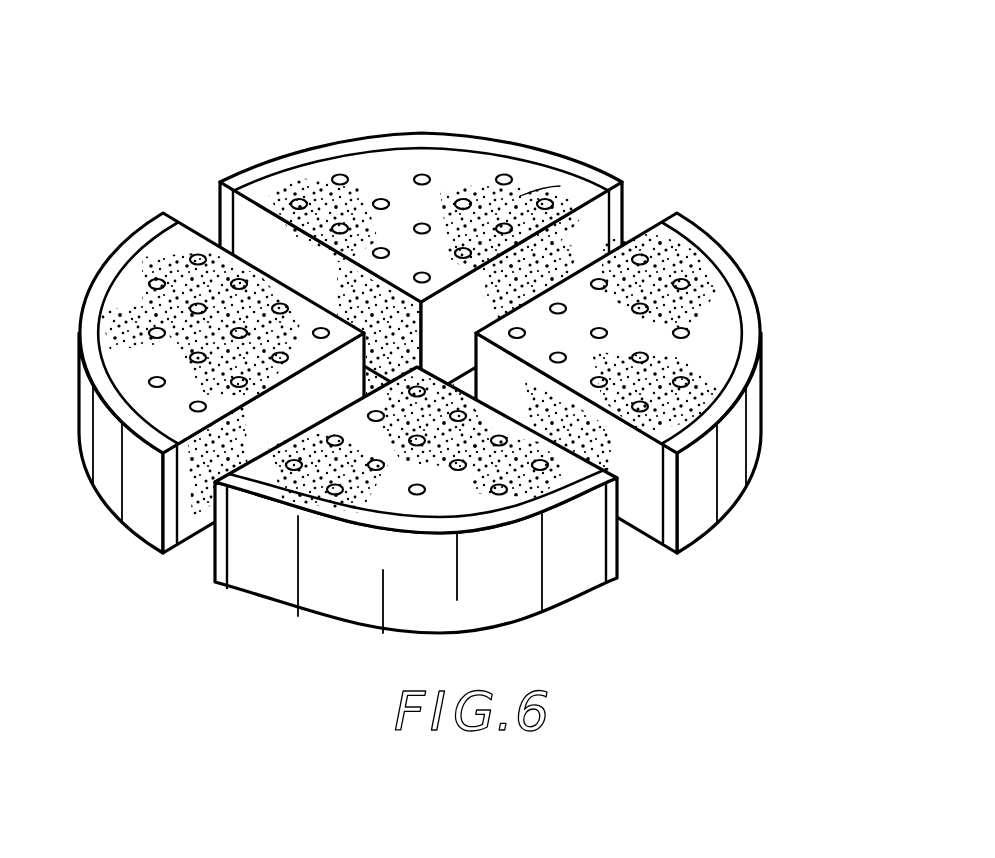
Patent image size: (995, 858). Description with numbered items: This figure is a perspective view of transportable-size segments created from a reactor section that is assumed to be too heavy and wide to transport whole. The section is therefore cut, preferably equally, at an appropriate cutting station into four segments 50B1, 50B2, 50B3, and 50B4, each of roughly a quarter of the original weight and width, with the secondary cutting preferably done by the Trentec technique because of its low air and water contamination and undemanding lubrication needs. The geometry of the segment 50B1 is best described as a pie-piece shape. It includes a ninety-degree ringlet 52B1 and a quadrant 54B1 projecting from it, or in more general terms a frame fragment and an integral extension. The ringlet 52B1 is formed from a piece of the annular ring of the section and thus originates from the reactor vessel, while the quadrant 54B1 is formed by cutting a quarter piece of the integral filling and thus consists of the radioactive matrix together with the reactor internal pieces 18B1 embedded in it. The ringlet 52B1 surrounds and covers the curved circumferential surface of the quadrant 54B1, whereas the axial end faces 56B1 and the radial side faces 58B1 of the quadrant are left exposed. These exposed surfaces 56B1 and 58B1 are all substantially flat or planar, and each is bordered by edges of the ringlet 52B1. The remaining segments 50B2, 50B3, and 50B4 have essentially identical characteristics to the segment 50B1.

The segment 50B1 is at (443, 231).
The segment 50B2 is at (745, 524).
The segment 50B3 is at (299, 628).
The segment 50B4 is at (112, 522).
The ringlet 52B1 is at (428, 146).
The quadrant 54B1 is at (377, 178).
The axial end faces 56B1 is at (562, 181).
The radial side faces 58B1 is at (286, 246).
The reactor internal pieces 18B1 is at (422, 224).